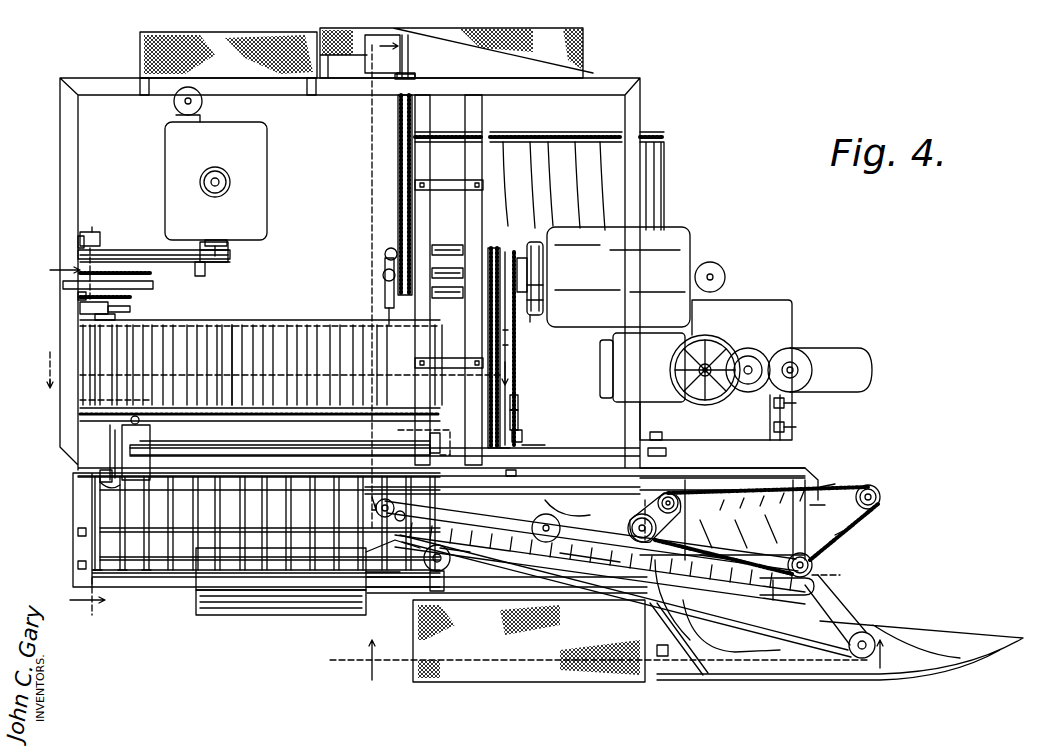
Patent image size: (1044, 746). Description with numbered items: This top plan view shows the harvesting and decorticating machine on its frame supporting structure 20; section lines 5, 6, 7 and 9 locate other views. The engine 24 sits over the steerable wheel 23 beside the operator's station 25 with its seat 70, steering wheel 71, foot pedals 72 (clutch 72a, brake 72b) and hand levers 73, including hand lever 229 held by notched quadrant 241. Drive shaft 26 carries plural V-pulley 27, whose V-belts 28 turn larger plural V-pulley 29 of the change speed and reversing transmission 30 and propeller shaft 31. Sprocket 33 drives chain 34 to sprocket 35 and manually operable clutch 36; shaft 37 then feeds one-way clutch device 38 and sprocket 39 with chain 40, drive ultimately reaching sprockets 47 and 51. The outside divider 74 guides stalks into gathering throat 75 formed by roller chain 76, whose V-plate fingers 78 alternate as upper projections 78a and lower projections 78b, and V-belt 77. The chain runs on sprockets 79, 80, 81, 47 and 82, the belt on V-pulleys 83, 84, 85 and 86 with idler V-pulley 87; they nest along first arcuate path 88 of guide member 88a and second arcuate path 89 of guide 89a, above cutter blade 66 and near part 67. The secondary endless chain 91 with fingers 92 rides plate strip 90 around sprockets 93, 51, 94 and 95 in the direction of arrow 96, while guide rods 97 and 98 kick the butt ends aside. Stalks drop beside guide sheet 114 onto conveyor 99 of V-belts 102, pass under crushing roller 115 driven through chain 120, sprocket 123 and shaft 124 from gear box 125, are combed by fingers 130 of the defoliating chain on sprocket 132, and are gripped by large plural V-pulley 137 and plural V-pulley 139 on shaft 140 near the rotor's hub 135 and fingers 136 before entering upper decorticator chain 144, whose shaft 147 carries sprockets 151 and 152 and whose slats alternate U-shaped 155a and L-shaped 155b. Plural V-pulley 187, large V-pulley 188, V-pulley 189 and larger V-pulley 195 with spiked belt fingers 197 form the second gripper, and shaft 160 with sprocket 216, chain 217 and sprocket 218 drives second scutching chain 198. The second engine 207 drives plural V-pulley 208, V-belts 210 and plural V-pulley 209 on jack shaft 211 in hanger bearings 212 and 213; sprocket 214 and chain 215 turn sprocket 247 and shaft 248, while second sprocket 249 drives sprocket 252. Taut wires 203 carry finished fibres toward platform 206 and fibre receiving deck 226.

The frame supporting structure 20 is at (54, 212).
The section line 5 is at (380, 275).
The section line 6 is at (68, 431).
The section line 7 is at (269, 367).
The section line 9 is at (611, 660).
The platform 206 is at (155, 48).
The fibre receiving deck 226 is at (585, 46).
The taut wires 203 is at (411, 50).
The plural V-pulley 189 is at (412, 78).
The second engine 207 is at (268, 160).
The very large plural V-pulley 188 is at (398, 172).
The fingers or spikes 197 is at (388, 250).
The second larger V-pulley 195 is at (385, 265).
The shaft 140 is at (383, 275).
The plural V-pulley 187 is at (386, 302).
The sprocket 216 is at (448, 135).
The shaft 160 is at (450, 236).
The chain 217 is at (520, 134).
The upper cross slatted scutching chain 198 is at (583, 144).
The sprocket 218 is at (665, 137).
The plural V-pulley 139 is at (492, 250).
The propeller shaft 31 is at (508, 252).
The sprocket 33 is at (522, 258).
The change speed and reversing transmission 30 is at (536, 245).
The drive shaft 26 is at (544, 270).
The plural V-pulley 27 is at (544, 285).
The V-belts 28 is at (544, 300).
The large plural V-pulley 29 is at (536, 318).
The large plural V-pulley 137 is at (509, 332).
The chain 34 is at (509, 346).
The radially extending fingers 136 is at (516, 398).
The manually operable clutch 36 is at (517, 412).
The sprocket 35 is at (522, 438).
The hub 135 is at (546, 446).
The sprocket 39 is at (430, 430).
The one-way clutch device 38 is at (430, 445).
The chain 40 is at (446, 450).
The shaft 37 is at (505, 447).
The hanger bearing 212 is at (93, 231).
The jack shaft 211 is at (78, 242).
The plural V-pulley 209 is at (126, 250).
The chain 215 is at (130, 255).
The plural V-pulley 208 is at (230, 258).
The plural V-belts 210 is at (203, 264).
The sprocket 247 is at (151, 272).
The sprocket 214 is at (63, 284).
The shaft 248 is at (131, 296).
The second sprocket 249 is at (78, 296).
The hanger bearing 213 is at (80, 308).
The sprocket 252 is at (130, 309).
The shaft 147 is at (95, 318).
The sprocket 152 is at (165, 321).
The upper endless chain conveyor 144 is at (271, 333).
The U-shaped cross slat 155a is at (234, 340).
The sprocket 151 is at (80, 402).
The gear box 125 is at (182, 412).
The fingers 130 is at (247, 416).
The L-shaped cross slat 155b is at (330, 421).
The upper roller 115 is at (142, 454).
The sprocket 132 is at (130, 420).
The chain 120 is at (122, 445).
The sprocket 123 is at (100, 474).
The shaft 124 is at (112, 482).
The conveyor 99 is at (185, 568).
The V-belts 102 is at (145, 572).
The guide sheet 114 is at (290, 614).
The sprocket 82 is at (372, 556).
The V-pulley 85 is at (372, 575).
The engine 24 is at (690, 232).
The operator's station 25 is at (780, 300).
The seat 70 is at (642, 367).
The steering wheel 71 is at (712, 404).
The steerable wheel 23 is at (852, 362).
The foot pedals 72 is at (770, 410).
The clutch pedal 72a is at (796, 405).
The brake pedal 72b is at (796, 432).
The notched quadrant 241 is at (652, 436).
The hand lever 229 is at (656, 456).
The hand engaging levers 73 is at (680, 470).
The endless chain 91 is at (776, 536).
The sprocket 47 is at (670, 530).
The sprocket 51 is at (677, 507).
The sprocket 94 is at (635, 517).
The fingers 92 is at (716, 520).
The sprocket 80 is at (879, 495).
The sprocket 93 is at (806, 554).
The roller chain 76 is at (886, 518).
The upper V-plate projections 78a is at (822, 487).
The lower V-plate projections 78b is at (812, 506).
The V-shape plate-like fingers 78 is at (838, 536).
The sprocket 79 is at (831, 572).
The gathering throat 75 is at (876, 573).
The V-pulley 83 is at (816, 588).
The endless flexible V-belt 77 is at (863, 611).
The V-pulley 84 is at (876, 634).
The outside divider 74 is at (965, 660).
The guide sheet 67 is at (708, 650).
The plate strip 90 is at (662, 612).
The cutter blade 66 is at (660, 657).
The sprocket 95 is at (377, 510).
The second arcuate path 89 is at (483, 523).
The first arcuate path 88 is at (730, 600).
The stationary arcuate guide member 88a is at (588, 562).
The V-pulley 86 is at (546, 543).
The V-pulley 87 is at (438, 572).
The arcuate guide 89a is at (455, 550).
The arrow 96 is at (773, 601).
The guide rod 97 is at (722, 556).
The curved guide rod 98 is at (560, 500).
The sprocket 81 is at (643, 518).